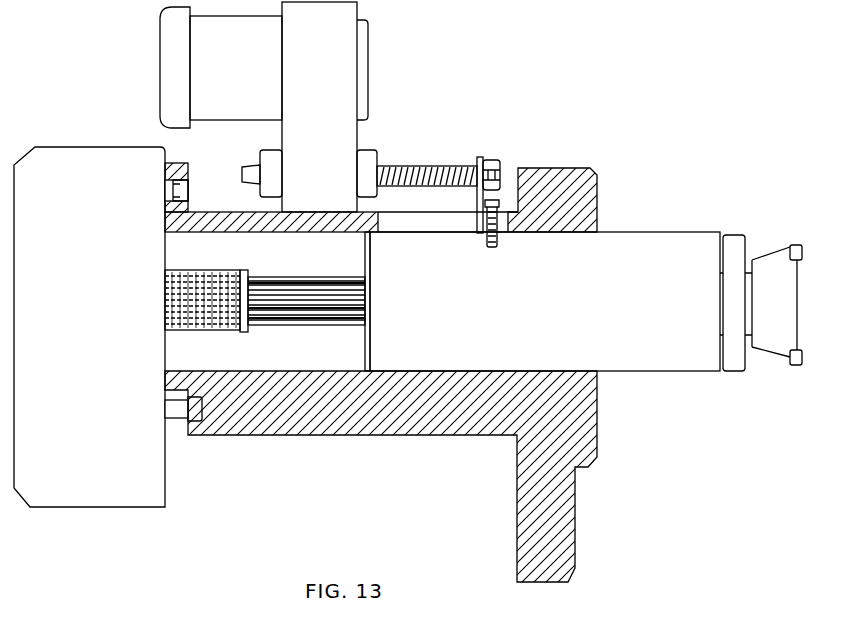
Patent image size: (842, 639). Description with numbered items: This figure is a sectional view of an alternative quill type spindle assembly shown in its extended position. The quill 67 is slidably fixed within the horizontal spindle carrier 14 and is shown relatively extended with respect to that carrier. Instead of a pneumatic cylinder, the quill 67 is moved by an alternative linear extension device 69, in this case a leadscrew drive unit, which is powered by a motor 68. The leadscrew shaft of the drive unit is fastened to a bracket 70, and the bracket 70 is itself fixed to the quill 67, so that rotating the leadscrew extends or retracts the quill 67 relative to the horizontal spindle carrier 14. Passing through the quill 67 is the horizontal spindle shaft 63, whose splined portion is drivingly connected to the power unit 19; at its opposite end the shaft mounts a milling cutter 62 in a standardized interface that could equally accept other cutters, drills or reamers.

The horizontal spindle carrier 14 is at (575, 527).
The power unit 19 is at (72, 520).
The milling cutter 62 is at (779, 365).
The horizontal spindle shaft 63 is at (292, 323).
The quill 67 is at (678, 233).
The motor 68 is at (160, 58).
The linear extension device 69 is at (355, 150).
The bracket 70 is at (478, 157).